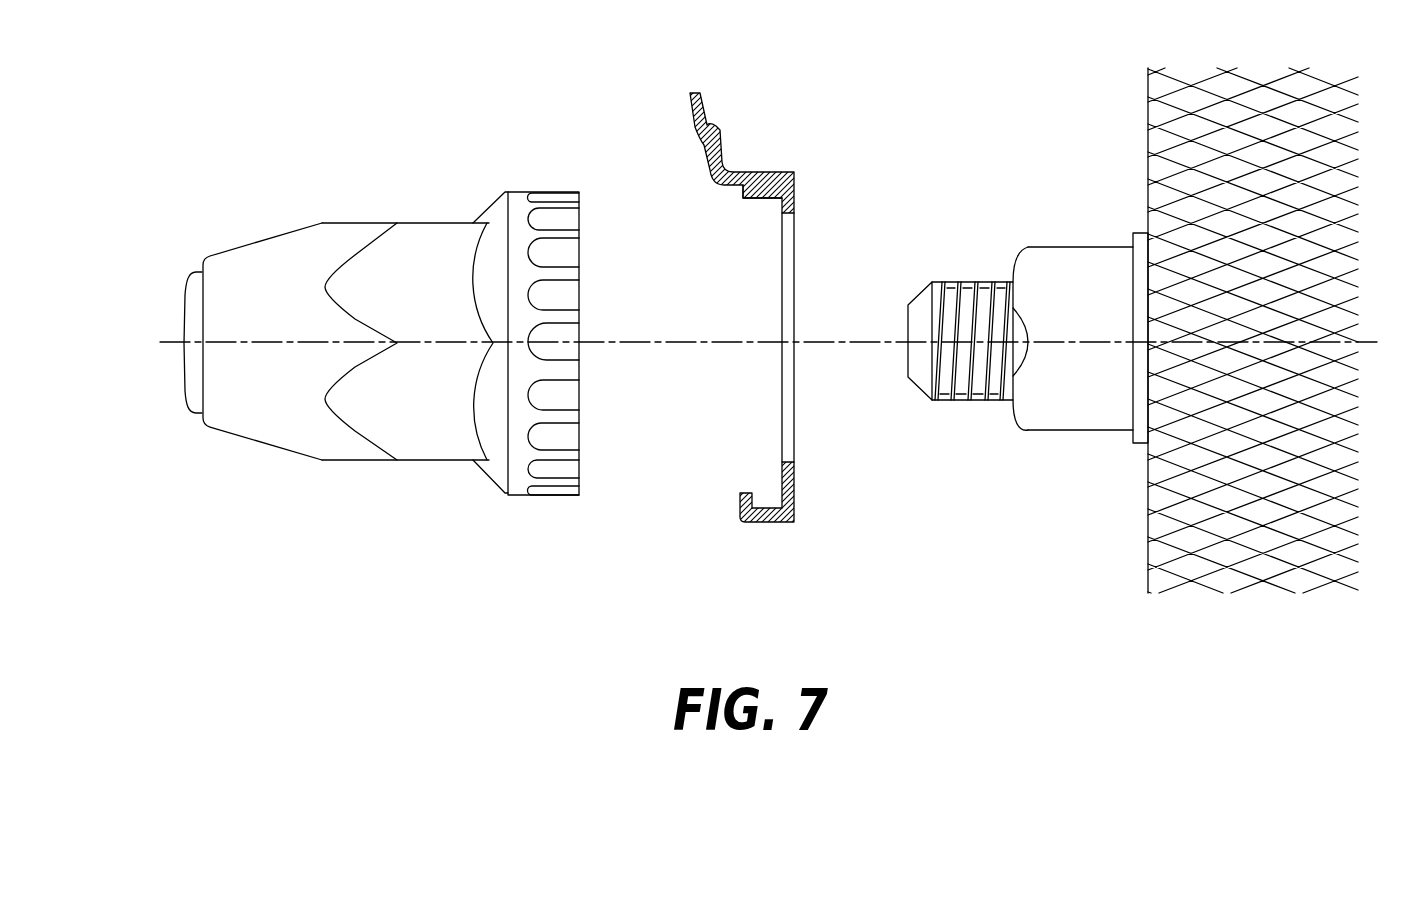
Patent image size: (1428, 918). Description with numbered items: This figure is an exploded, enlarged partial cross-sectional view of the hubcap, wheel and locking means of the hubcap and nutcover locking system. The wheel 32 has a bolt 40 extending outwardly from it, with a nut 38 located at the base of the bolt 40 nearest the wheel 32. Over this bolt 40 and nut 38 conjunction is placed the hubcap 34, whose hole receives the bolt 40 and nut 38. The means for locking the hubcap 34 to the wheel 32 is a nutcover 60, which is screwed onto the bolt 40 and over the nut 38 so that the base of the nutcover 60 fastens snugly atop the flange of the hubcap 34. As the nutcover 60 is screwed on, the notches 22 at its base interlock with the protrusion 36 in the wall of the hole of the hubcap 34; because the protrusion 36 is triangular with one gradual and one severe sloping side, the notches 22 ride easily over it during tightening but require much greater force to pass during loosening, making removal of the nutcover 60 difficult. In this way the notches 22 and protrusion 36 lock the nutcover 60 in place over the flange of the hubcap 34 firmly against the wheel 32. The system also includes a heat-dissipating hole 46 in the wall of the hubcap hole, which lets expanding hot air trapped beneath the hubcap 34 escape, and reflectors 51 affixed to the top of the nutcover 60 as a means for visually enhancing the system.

The notches 22 is at (556, 236).
The wheel 32 is at (1305, 418).
The hubcap 34 is at (693, 92).
The protrusion 36 is at (760, 194).
The nut 38 is at (1047, 430).
The bolt 40 is at (972, 282).
The hole 46 is at (768, 505).
The reflectors 51 is at (190, 428).
The nutcover 60 is at (242, 242).